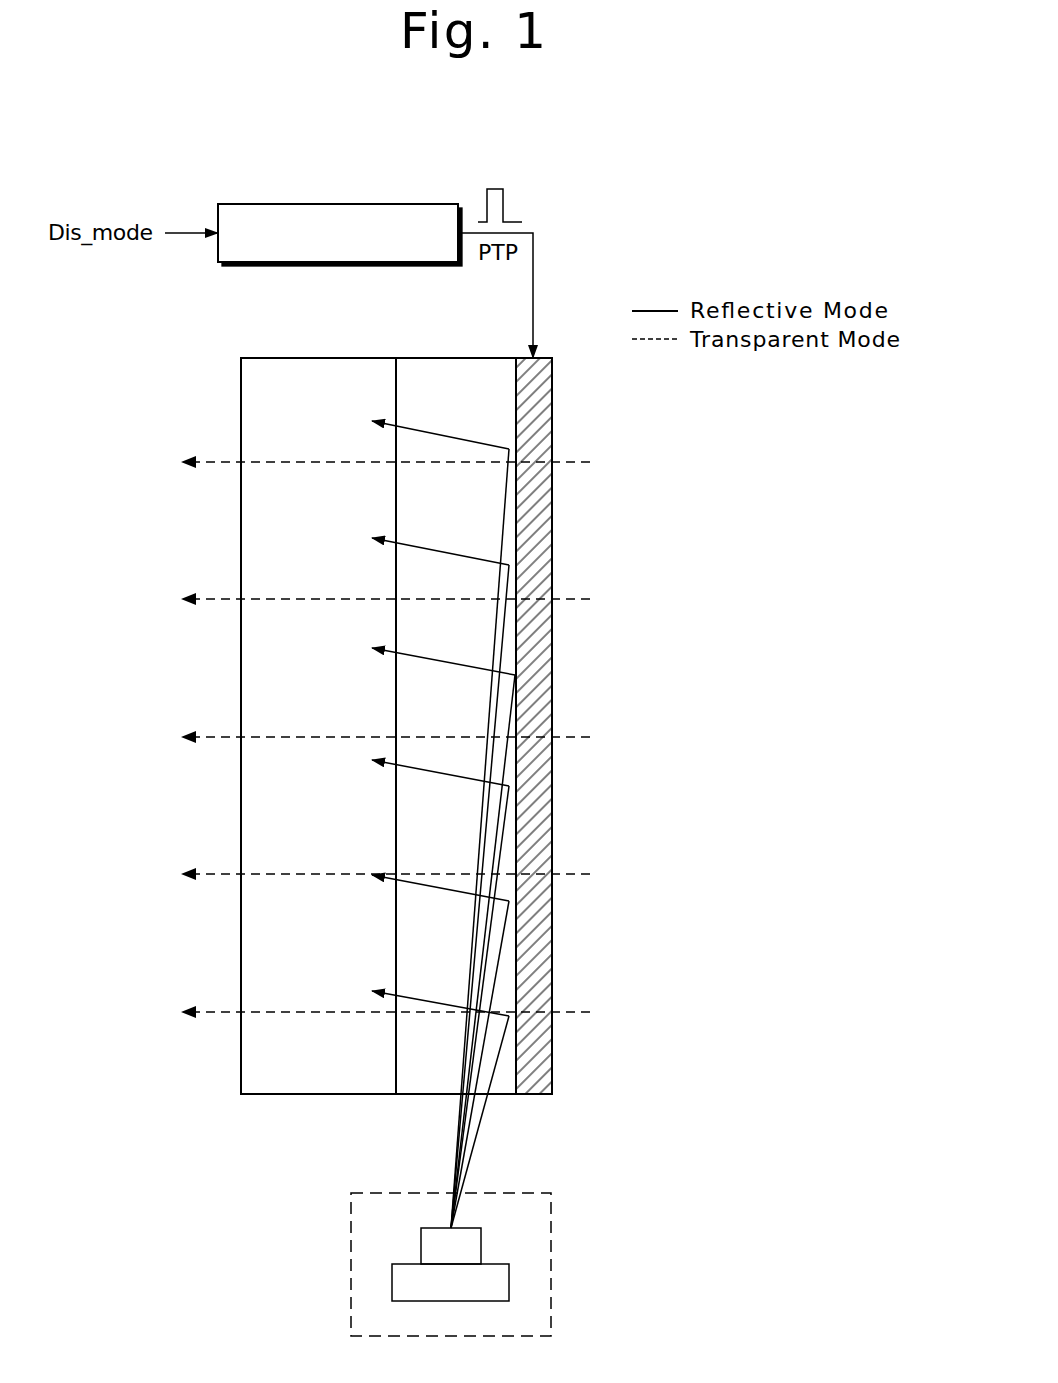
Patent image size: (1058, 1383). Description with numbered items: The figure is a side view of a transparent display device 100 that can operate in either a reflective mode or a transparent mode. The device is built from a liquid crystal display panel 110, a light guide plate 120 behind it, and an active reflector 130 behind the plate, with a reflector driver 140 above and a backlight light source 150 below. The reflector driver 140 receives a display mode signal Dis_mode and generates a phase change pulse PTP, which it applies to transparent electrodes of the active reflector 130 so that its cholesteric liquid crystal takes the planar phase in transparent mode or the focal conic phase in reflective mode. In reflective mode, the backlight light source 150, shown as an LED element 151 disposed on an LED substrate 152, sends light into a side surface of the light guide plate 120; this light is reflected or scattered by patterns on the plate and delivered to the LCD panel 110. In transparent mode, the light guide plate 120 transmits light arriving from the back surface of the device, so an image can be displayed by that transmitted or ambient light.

The transparent display device 100 is at (777, 120).
The liquid crystal display panel 110 is at (298, 1095).
The light guide plate 120 is at (413, 1095).
The active reflector 130 is at (533, 1095).
The reflector driver 140 is at (398, 204).
The backlight light source 150 is at (351, 1243).
The LED element 151 is at (481, 1245).
The LED substrate 152 is at (509, 1282).